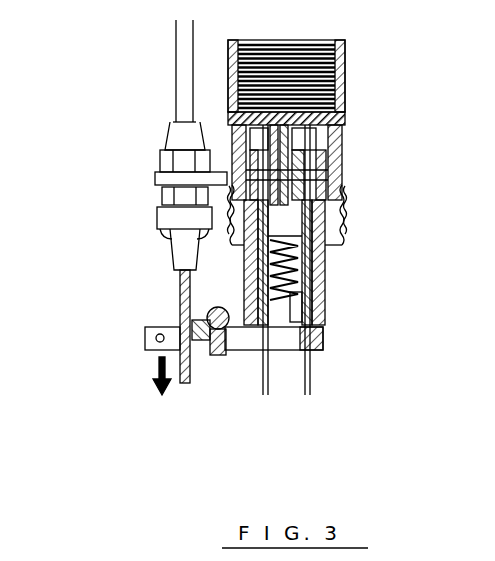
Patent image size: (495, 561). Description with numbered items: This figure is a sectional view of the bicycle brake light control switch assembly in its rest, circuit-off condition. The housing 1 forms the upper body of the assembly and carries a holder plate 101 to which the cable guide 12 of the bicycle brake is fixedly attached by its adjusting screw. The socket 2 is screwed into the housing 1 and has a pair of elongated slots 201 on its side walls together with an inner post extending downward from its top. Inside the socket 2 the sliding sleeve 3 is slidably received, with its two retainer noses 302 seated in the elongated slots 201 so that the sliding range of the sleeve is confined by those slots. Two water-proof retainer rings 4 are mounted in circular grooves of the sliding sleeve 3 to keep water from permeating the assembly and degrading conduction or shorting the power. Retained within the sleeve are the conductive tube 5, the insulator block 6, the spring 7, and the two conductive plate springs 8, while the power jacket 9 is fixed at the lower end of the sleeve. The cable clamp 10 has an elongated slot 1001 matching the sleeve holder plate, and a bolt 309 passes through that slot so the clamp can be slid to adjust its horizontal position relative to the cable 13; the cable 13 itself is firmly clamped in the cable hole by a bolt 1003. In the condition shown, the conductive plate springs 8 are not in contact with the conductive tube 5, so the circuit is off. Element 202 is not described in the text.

The housing 1 is at (345, 72).
The socket 2 is at (342, 238).
The sliding sleeve 3 is at (312, 283).
The retainer rings 4 is at (342, 157).
The conductive tube 5 is at (342, 135).
The insulator block 6 is at (342, 180).
The spring 7 is at (325, 260).
The conductive plate springs 8 is at (325, 272).
The power jacket 9 is at (325, 300).
The cable clamp 10 is at (247, 350).
The cable guide 12 is at (206, 118).
The cable 13 is at (190, 365).
The holder plate 101 is at (158, 176).
The elongated slots 201 is at (345, 200).
The bore 202 is at (342, 148).
The retainer noses 302 is at (345, 212).
The bolt 309 is at (226, 355).
The elongated slot 1001 is at (286, 350).
The bolt 1003 is at (164, 342).